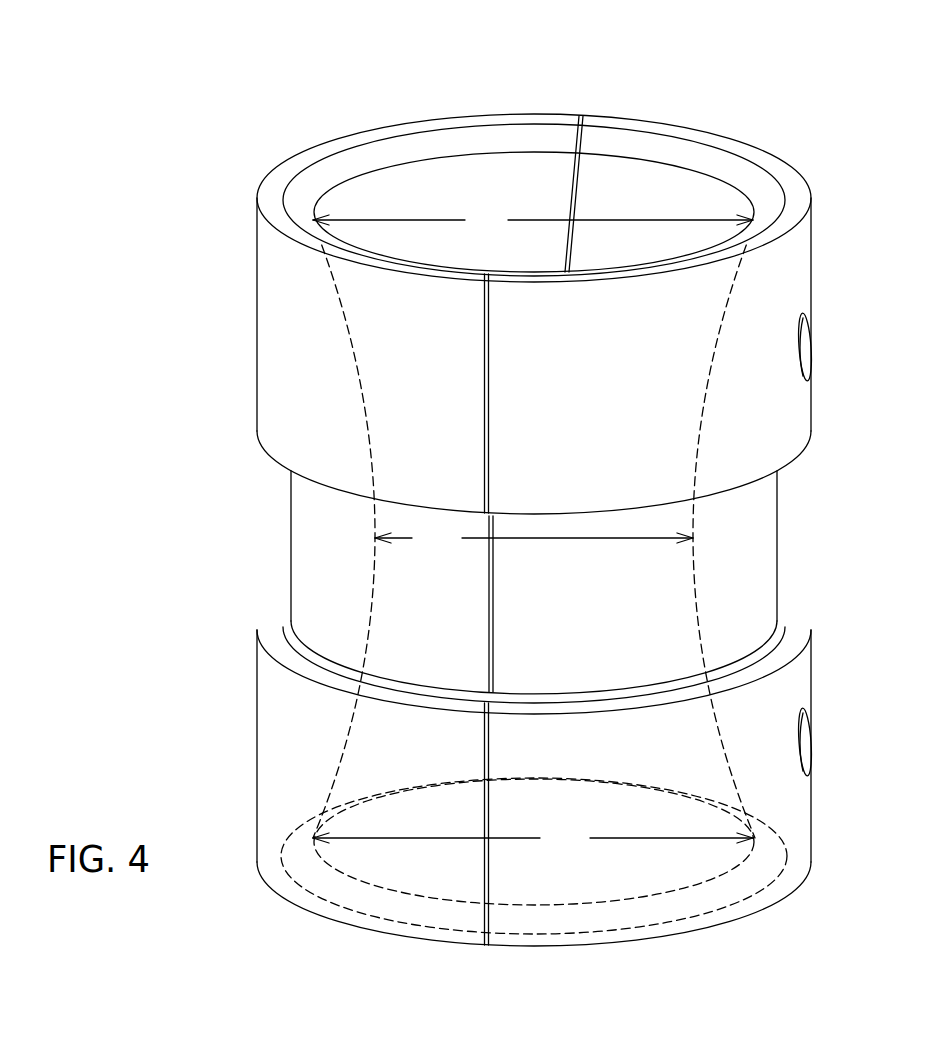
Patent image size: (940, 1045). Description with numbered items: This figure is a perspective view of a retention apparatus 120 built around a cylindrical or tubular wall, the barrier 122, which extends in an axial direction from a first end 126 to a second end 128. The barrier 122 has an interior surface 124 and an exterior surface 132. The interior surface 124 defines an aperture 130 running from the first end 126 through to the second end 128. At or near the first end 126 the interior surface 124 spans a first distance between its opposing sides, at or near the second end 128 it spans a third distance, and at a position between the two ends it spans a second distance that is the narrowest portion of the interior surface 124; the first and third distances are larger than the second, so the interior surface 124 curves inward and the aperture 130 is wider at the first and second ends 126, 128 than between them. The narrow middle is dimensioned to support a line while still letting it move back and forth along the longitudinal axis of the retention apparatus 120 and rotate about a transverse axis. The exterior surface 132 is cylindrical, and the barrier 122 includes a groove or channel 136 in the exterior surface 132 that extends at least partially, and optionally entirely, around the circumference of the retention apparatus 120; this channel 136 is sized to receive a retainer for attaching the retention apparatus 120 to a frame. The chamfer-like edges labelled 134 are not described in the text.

The retention apparatus 120 is at (265, 82).
The barrier 122 is at (328, 412).
The interior surface 124 is at (718, 720).
The first end 126 is at (798, 192).
The second end 128 is at (322, 913).
The aperture 130 is at (607, 463).
The exterior surface 132 is at (812, 410).
The chamfer edge 134 is at (363, 160).
The channel 136 is at (312, 547).